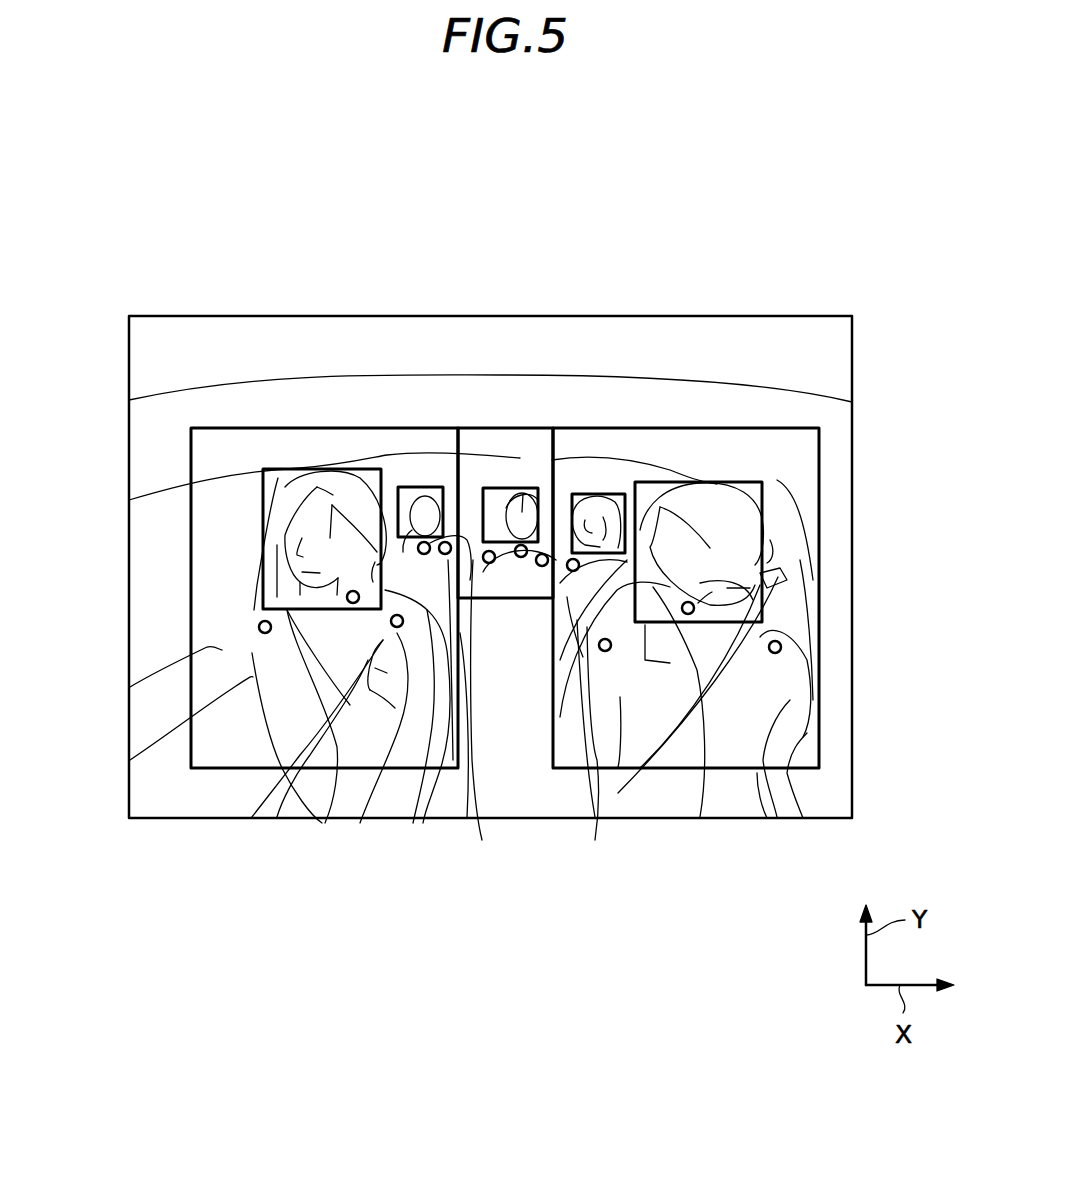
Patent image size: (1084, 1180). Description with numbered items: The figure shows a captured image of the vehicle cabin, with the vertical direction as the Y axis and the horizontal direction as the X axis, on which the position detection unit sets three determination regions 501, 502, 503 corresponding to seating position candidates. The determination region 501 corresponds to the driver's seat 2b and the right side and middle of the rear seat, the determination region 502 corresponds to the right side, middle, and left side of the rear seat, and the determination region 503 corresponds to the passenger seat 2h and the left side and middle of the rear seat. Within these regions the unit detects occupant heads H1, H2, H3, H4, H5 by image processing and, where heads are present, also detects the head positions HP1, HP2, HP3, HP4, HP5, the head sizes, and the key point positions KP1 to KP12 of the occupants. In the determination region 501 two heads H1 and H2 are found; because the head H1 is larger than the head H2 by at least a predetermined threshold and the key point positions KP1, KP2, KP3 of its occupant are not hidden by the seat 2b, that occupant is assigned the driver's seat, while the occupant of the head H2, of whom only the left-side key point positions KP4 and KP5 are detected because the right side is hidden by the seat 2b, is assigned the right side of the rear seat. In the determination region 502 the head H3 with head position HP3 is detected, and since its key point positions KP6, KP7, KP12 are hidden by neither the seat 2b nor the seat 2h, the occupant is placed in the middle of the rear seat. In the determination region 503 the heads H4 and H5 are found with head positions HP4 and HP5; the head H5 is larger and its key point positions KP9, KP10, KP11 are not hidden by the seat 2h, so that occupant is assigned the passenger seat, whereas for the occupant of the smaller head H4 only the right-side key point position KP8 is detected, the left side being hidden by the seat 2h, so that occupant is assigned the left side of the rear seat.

The determination region 501 is at (304, 770).
The determination region 502 is at (498, 427).
The determination region 503 is at (787, 773).
The head position HP1 is at (255, 598).
The head position HP2 is at (410, 487).
The head position HP3 is at (505, 487).
The head position HP4 is at (588, 494).
The head position HP5 is at (757, 482).
The head H1 is at (288, 653).
The head H2 is at (425, 507).
The head H3 is at (519, 497).
The head H4 is at (610, 513).
The head H5 is at (700, 817).
The key point position KP1 is at (258, 626).
The key point position KP2 is at (352, 604).
The key point position KP3 is at (397, 628).
The key point position KP4 is at (445, 555).
The key point position KP5 is at (489, 564).
The key point position KP6 is at (522, 558).
The key point position KP7 is at (542, 567).
The key point position KP8 is at (580, 566).
The key point position KP9 is at (691, 603).
The key point position KP10 is at (606, 640).
The key point position KP11 is at (782, 647).
The key point position KP12 is at (497, 486).
The seat 2b is at (472, 615).
The seat 2h is at (595, 840).